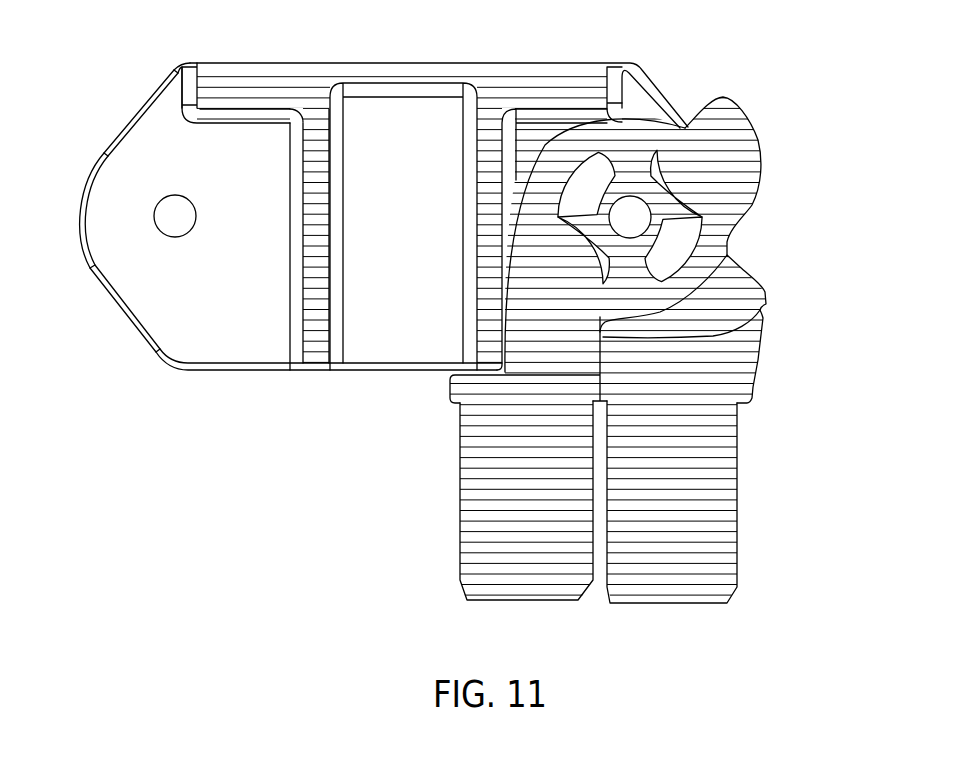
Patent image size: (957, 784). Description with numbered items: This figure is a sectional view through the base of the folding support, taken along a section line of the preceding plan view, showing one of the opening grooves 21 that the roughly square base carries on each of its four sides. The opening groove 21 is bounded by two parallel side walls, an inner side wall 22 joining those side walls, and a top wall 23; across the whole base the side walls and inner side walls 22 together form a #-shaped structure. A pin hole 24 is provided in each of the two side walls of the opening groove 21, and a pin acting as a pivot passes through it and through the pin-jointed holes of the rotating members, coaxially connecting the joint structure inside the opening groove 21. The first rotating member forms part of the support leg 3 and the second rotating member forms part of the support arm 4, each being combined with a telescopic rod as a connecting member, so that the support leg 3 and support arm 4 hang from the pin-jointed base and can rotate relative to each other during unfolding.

The opening groove 21 is at (170, 300).
The inner side wall 22 is at (320, 330).
The top wall 23 is at (232, 97).
The pin hole 24 is at (176, 216).
The support leg 3 is at (482, 473).
The support arm 4 is at (717, 467).